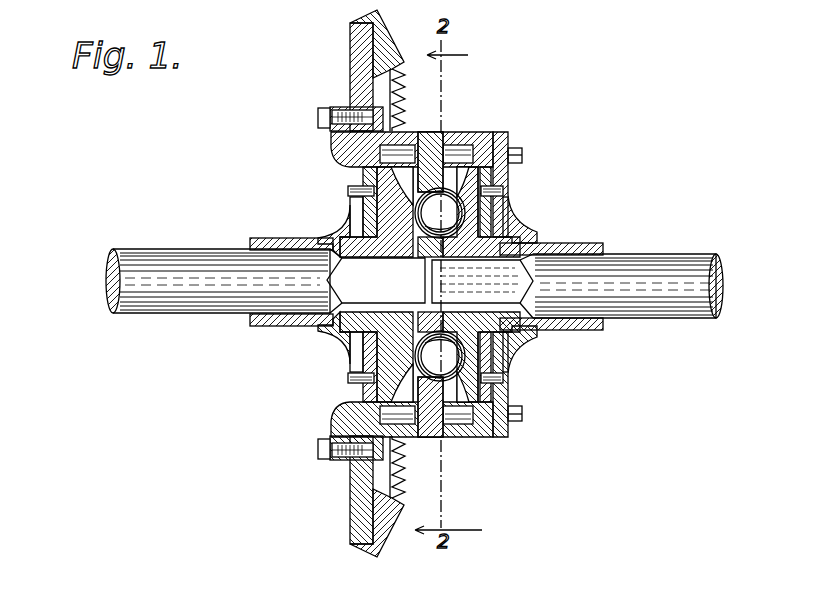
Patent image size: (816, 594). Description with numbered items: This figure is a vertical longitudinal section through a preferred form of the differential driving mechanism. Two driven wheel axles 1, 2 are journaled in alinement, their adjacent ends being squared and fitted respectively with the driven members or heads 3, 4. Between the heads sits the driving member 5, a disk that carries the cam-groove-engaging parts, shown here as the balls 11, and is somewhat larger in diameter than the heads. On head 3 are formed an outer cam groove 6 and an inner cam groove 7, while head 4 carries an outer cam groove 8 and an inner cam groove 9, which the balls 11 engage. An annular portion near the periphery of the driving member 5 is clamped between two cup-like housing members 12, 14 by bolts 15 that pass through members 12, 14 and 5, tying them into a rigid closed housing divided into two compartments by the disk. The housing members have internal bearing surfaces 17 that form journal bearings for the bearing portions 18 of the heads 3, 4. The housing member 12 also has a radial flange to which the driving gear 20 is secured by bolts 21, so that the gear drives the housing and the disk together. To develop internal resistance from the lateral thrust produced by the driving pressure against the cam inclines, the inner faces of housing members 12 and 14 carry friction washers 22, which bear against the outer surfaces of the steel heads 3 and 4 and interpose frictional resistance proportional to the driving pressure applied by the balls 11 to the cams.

The driven wheel axle 1 is at (328, 282).
The driven wheel axle 2 is at (577, 286).
The driven member or head 3 is at (333, 227).
The driven member or head 4 is at (538, 228).
The driving member 5 is at (438, 135).
The outer cam groove 6 is at (350, 183).
The inner cam groove 7 is at (353, 208).
The outer cam groove 8 is at (505, 186).
The inner cam groove 9 is at (515, 207).
The ball 11 is at (440, 284).
The housing member 12 is at (330, 143).
The housing member 14 is at (509, 136).
The bolts 15 is at (523, 156).
The internal bearing surfaces 17 is at (335, 345).
The bearing portions 18 is at (330, 238).
The driving gear 20 is at (348, 63).
The bolts 21 is at (318, 116).
The friction washers 22 is at (340, 358).